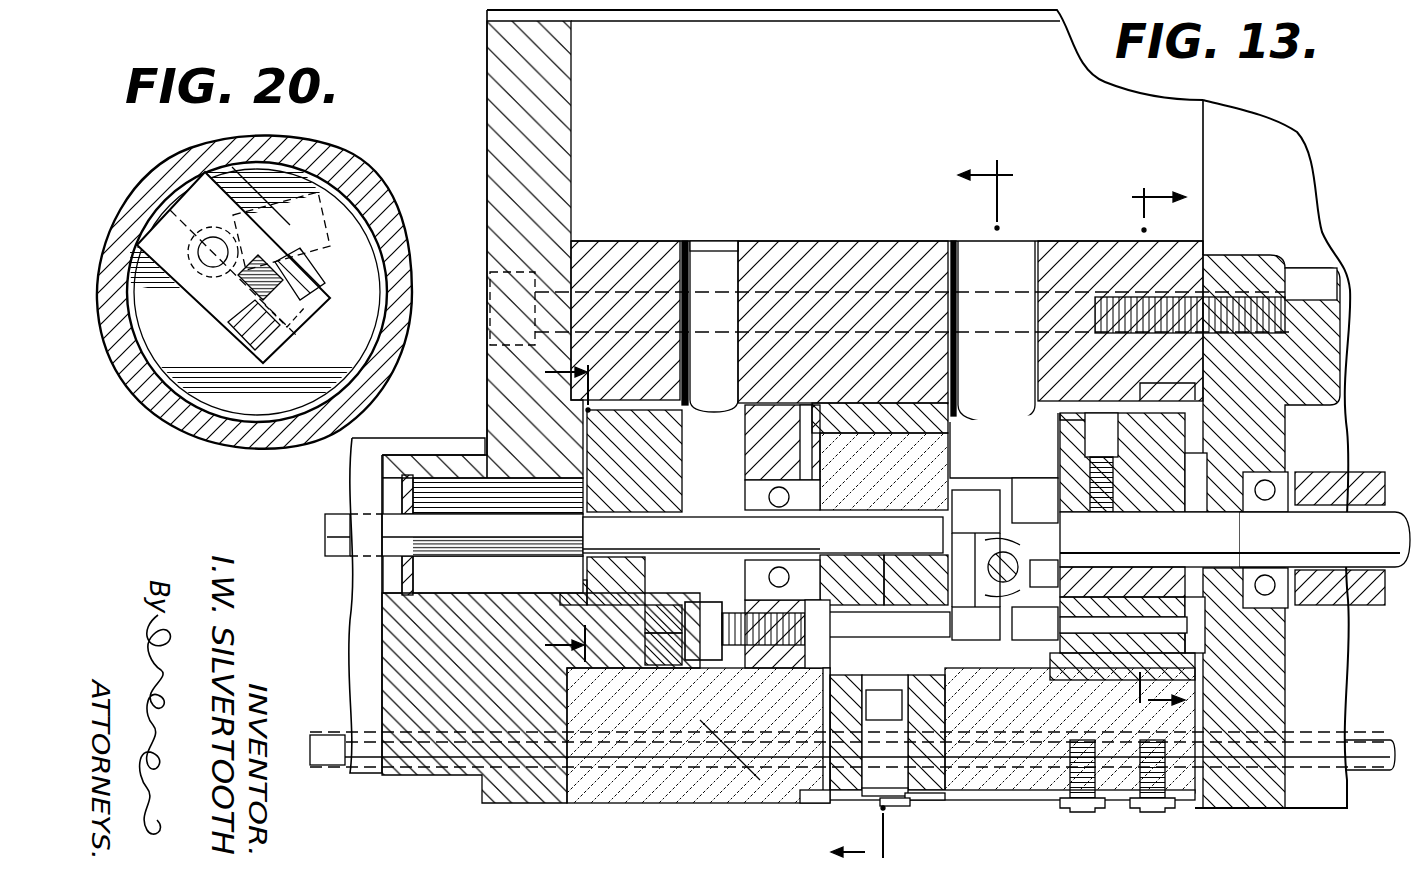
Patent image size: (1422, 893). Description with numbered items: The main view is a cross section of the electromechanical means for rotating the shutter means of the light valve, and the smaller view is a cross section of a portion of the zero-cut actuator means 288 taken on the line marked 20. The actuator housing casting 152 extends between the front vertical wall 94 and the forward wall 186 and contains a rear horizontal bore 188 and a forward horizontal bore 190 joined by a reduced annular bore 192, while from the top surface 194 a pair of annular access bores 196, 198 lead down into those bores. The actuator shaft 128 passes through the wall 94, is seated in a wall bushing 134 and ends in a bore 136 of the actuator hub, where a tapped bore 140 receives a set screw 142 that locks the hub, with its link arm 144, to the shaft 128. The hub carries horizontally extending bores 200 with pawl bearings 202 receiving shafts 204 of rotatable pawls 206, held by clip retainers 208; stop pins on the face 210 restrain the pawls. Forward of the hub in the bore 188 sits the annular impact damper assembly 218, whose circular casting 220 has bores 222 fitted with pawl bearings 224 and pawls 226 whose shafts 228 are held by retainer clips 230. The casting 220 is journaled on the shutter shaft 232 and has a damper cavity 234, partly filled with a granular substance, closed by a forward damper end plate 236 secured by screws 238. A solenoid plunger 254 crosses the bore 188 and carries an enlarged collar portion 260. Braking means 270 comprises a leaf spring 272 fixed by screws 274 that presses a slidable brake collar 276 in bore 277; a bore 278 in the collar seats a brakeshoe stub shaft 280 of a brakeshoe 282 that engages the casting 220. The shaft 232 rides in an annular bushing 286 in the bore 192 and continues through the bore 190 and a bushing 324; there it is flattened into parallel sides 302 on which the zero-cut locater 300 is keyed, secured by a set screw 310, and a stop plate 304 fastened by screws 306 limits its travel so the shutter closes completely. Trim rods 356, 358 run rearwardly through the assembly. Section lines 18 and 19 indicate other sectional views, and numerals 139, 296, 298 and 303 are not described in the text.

In FIG. 13, the front vertical wall 94 is at (1268, 710).
In FIG. 13, the actuator shaft 128 is at (1325, 538).
In FIG. 13, the wall bushing 134 is at (1282, 605).
In FIG. 13, the bore 136 is at (1180, 512).
In FIG. 13, the bearing housing 139 is at (1153, 437).
In FIG. 13, the bore 140 is at (1097, 470).
In FIG. 13, the set screw 142 is at (1112, 487).
In FIG. 13, the link arm 144 is at (1175, 406).
In FIG. 20, the actuator housing casting 152 is at (345, 185).
In FIG. 13, the forward wall 186 is at (490, 112).
In FIG. 13, the rear horizontal bore 188 is at (973, 667).
In FIG. 20, the forward horizontal bore 190 is at (270, 410).
In FIG. 13, the forward horizontal bore 190 is at (605, 672).
In FIG. 13, the reduced annular bore 192 is at (783, 485).
In FIG. 13, the top surface 194 is at (866, 250).
In FIG. 13, the annular bore 196 is at (1040, 255).
In FIG. 13, the annular bore 198 is at (728, 248).
In FIG. 13, the horizontally extending bores 200 is at (1093, 605).
In FIG. 13, the pawl bearing 202 is at (1045, 682).
In FIG. 13, the shafts 204 is at (1123, 625).
In FIG. 13, the rotatable pawls 206 is at (1036, 559).
In FIG. 13, the clip retainers 208 is at (1205, 665).
In FIG. 13, the face 210 is at (1013, 445).
In FIG. 13, the annular impact damper assembly 218 is at (932, 388).
In FIG. 13, the circular casting 220 is at (945, 467).
In FIG. 13, the horizontally extending bores 222 is at (852, 605).
In FIG. 13, the pawl bearings 224 is at (928, 605).
In FIG. 13, the pawls 226 is at (976, 565).
In FIG. 13, the shafts 228 is at (885, 625).
In FIG. 13, the retainer clips 230 is at (822, 668).
In FIG. 20, the shutter shaft 232 is at (230, 305).
In FIG. 13, the shutter shaft 232 is at (763, 535).
In FIG. 13, the damper cavity 234 is at (960, 428).
In FIG. 13, the forward damper end plate 236 is at (822, 400).
In FIG. 13, the screws 238 is at (795, 470).
In FIG. 13, the solenoid plunger 254 is at (1047, 574).
In FIG. 13, the collar portion 260 is at (1011, 565).
In FIG. 13, the braking means 270 is at (898, 810).
In FIG. 13, the leaf spring 272 is at (990, 802).
In FIG. 13, the screws 274 is at (1063, 802).
In FIG. 13, the slidable brake collar 276 is at (830, 792).
In FIG. 13, the bore 277 is at (905, 797).
In FIG. 13, the bore 278 is at (880, 792).
In FIG. 13, the brakeshoe stub shaft 280 is at (887, 732).
In FIG. 13, the brakeshoe 282 is at (826, 680).
In FIG. 13, the annular bushing 286 is at (767, 480).
In FIG. 20, the zero-cut actuator means 288 is at (165, 392).
In FIG. 13, the zero-cut actuator means 288 is at (672, 395).
In FIG. 13, the ball bearing 296 is at (742, 480).
In FIG. 13, the slot 298 is at (690, 410).
In FIG. 20, the zero-cut locater 300 is at (312, 312).
In FIG. 13, the zero-cut locater 300 is at (582, 452).
In FIG. 20, the parallel sides 302 is at (195, 290).
In FIG. 13, the parallel sides 302 is at (538, 548).
In FIG. 13, the block 303 is at (724, 735).
In FIG. 13, the stop plate 304 is at (658, 614).
In FIG. 13, the screws 306 is at (660, 638).
In FIG. 20, the set screw 310 is at (288, 325).
In FIG. 13, the bushing 324 is at (388, 490).
In FIG. 13, the trim rod 356 is at (328, 770).
In FIG. 13, the trim rod 358 is at (340, 735).
In FIG. 13, the section line 18- 18 is at (1135, 452).
In FIG. 13, the section line 19- 19 is at (905, 518).
In FIG. 13, the section line 20- 20 is at (544, 510).